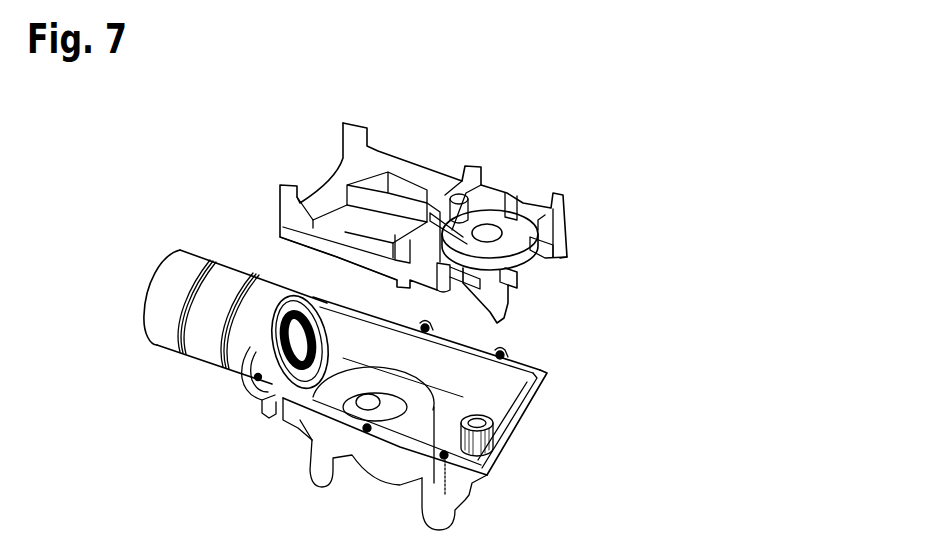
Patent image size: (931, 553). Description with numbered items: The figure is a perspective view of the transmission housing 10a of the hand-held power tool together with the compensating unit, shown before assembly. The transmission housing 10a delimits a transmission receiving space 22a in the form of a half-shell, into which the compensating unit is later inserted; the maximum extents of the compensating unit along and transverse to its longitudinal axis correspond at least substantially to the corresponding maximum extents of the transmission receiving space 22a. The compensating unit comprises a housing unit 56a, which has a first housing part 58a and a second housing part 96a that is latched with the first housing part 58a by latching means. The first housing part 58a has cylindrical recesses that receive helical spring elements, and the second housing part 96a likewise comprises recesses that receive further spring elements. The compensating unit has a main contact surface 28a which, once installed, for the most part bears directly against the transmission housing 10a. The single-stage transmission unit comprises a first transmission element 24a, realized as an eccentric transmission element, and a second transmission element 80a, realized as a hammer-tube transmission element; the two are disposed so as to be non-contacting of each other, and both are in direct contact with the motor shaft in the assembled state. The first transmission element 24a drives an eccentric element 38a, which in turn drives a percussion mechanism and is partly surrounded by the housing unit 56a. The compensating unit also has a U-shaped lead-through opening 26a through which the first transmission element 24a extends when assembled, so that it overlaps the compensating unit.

The transmission housing 10a is at (467, 480).
The transmission receiving space 22a is at (476, 386).
The first transmission element 24a is at (510, 417).
The lead-through opening 26a is at (541, 244).
The main contact surface 28a is at (290, 243).
The eccentric element 38a is at (530, 263).
The housing unit 56a is at (500, 180).
The first housing part 58a is at (427, 180).
The second transmission element 80a is at (322, 400).
The second housing part 96a is at (533, 213).